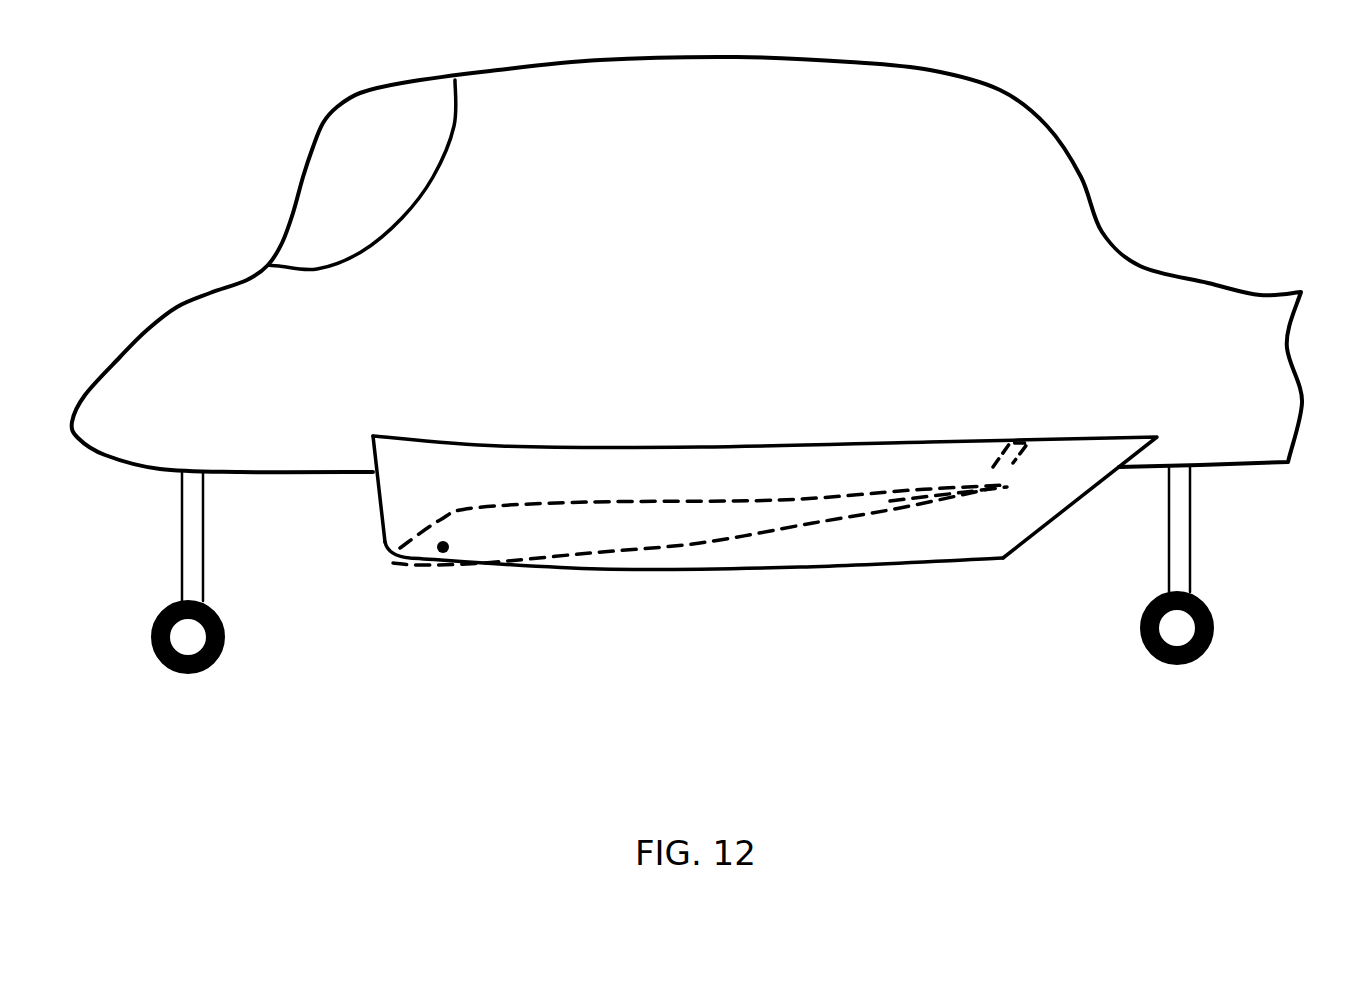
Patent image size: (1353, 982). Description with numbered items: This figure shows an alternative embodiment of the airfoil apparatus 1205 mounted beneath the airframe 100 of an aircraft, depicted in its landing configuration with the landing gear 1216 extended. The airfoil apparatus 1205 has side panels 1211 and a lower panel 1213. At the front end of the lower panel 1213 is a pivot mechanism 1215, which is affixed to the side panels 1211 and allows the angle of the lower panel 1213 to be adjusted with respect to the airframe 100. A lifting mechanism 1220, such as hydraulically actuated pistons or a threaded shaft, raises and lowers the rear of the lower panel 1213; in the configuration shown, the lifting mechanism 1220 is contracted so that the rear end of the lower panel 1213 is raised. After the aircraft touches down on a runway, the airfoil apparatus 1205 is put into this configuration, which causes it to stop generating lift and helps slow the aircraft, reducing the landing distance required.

The airframe 100 is at (1121, 189).
The airfoil apparatus 1205 is at (712, 493).
The side panels 1211 is at (407, 495).
The lower panel 1213 is at (618, 522).
The pivot mechanism 1215 is at (438, 558).
The landing gear 1216 is at (225, 647).
The lifting mechanism 1220 is at (993, 475).